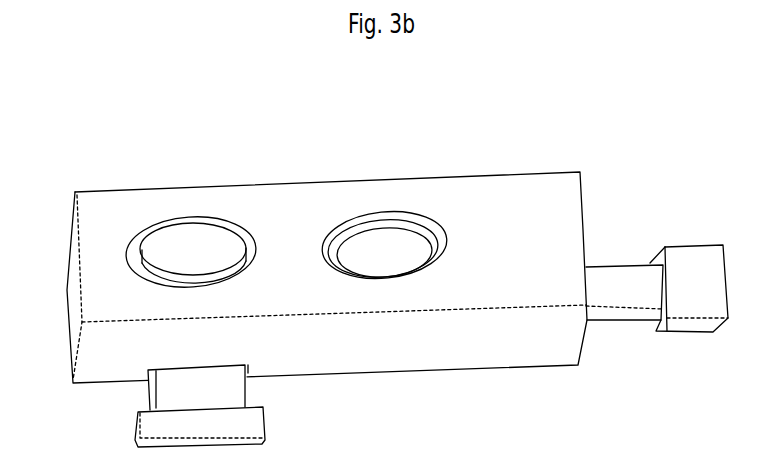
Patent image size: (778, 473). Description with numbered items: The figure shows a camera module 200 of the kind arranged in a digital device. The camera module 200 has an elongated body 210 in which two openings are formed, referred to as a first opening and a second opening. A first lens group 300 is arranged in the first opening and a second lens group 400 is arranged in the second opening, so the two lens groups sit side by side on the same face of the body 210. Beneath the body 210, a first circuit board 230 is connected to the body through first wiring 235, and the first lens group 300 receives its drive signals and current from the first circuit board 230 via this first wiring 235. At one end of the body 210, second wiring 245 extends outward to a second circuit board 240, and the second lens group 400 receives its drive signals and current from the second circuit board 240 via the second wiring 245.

The camera module 200 is at (105, 156).
The body 210 is at (412, 350).
The first circuit board 230 is at (250, 422).
The first wiring 235 is at (217, 392).
The second circuit board 240 is at (698, 298).
The second wiring 245 is at (638, 300).
The first lens group 300 is at (190, 228).
The second lens group 400 is at (383, 242).